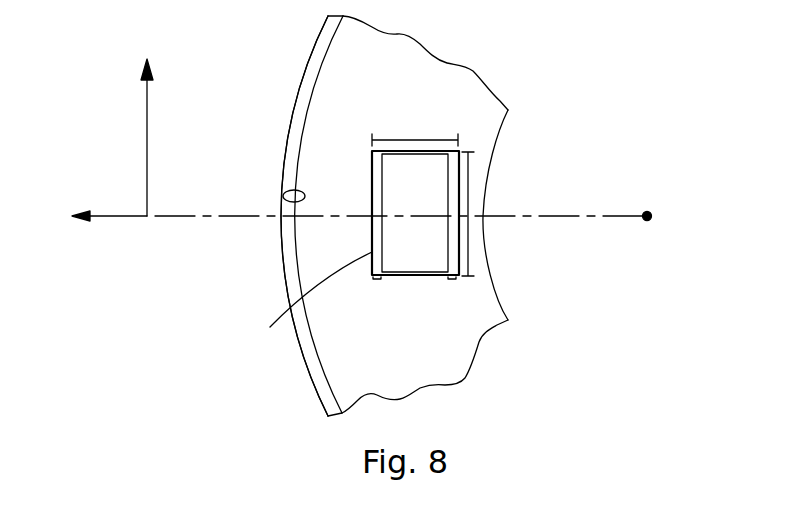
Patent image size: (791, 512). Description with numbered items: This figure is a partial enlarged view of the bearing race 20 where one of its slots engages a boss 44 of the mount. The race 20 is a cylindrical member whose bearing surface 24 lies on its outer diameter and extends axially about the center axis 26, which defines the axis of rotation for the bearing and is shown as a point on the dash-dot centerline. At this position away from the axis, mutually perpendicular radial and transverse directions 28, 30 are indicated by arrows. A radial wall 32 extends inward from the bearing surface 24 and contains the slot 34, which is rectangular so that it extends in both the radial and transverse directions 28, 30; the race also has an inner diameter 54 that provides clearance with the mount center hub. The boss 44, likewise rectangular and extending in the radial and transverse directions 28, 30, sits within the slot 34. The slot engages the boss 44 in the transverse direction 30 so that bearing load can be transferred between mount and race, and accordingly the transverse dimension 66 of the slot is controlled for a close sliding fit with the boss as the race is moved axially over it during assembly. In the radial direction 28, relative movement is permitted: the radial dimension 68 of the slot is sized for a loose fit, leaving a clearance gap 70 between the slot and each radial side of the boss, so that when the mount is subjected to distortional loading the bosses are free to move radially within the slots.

The bearing race 20 is at (268, 117).
The bearing surface 24 is at (282, 181).
The center axis 26 is at (642, 221).
The radial direction 28 is at (97, 216).
The transverse direction 30 is at (146, 125).
The radial wall 32 is at (424, 104).
The slot 34 is at (310, 301).
The boss 44 is at (424, 188).
The inner diameter of the race 54 is at (283, 197).
The transverse dimension 66 is at (468, 215).
The radial dimension 68 is at (419, 138).
The clearance gap 70 is at (377, 283).